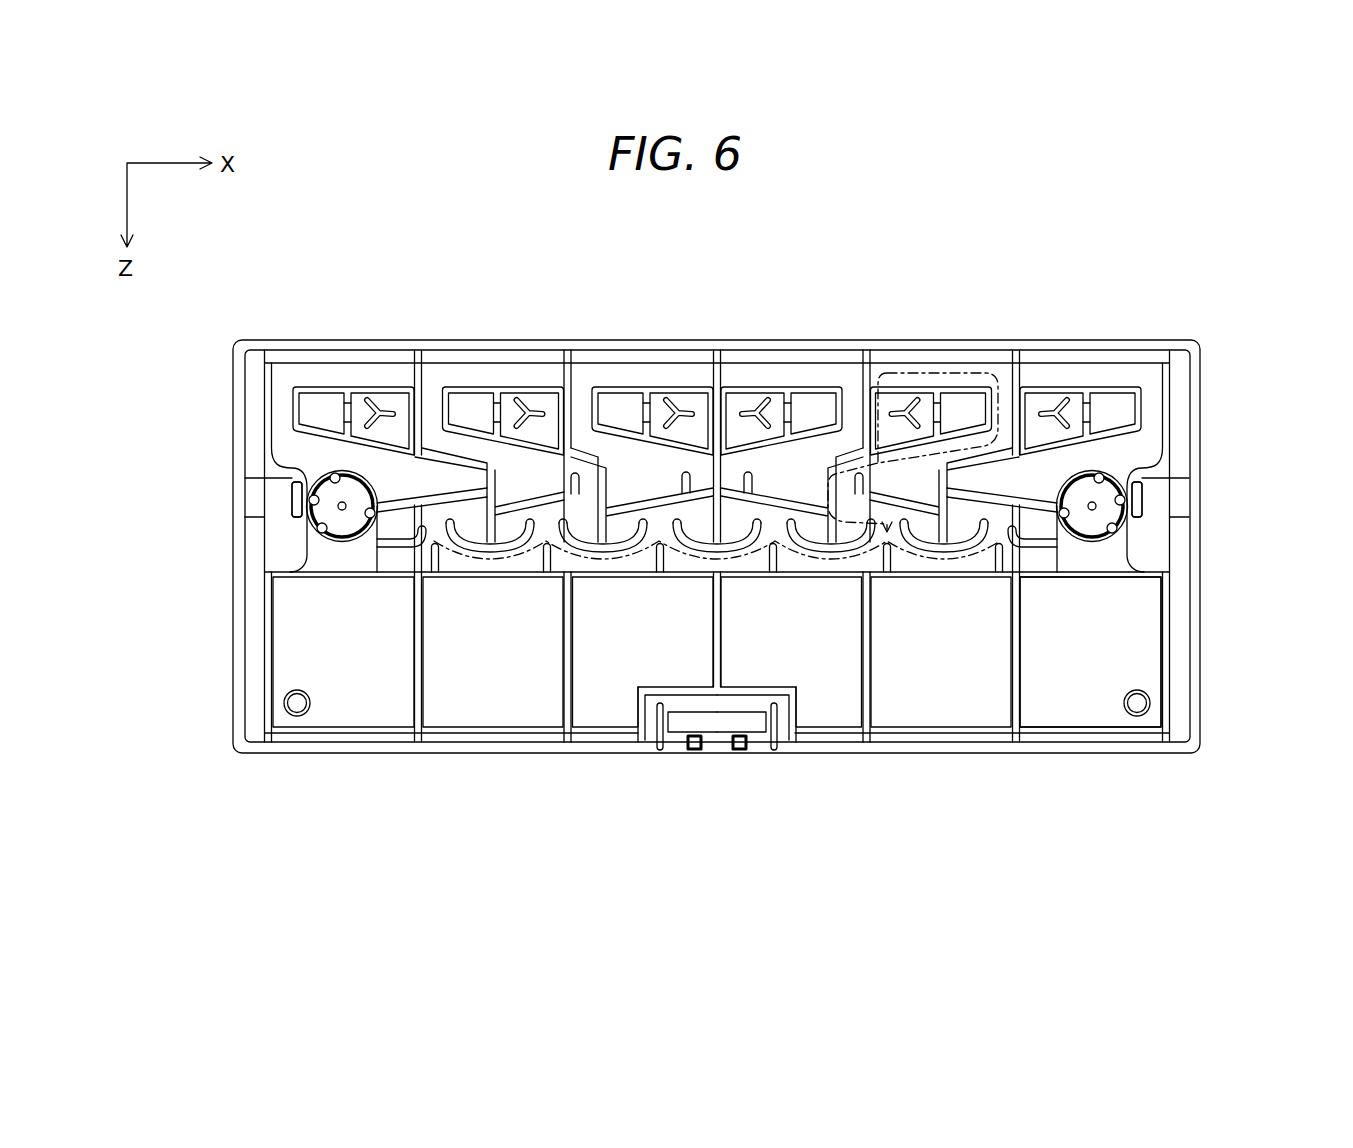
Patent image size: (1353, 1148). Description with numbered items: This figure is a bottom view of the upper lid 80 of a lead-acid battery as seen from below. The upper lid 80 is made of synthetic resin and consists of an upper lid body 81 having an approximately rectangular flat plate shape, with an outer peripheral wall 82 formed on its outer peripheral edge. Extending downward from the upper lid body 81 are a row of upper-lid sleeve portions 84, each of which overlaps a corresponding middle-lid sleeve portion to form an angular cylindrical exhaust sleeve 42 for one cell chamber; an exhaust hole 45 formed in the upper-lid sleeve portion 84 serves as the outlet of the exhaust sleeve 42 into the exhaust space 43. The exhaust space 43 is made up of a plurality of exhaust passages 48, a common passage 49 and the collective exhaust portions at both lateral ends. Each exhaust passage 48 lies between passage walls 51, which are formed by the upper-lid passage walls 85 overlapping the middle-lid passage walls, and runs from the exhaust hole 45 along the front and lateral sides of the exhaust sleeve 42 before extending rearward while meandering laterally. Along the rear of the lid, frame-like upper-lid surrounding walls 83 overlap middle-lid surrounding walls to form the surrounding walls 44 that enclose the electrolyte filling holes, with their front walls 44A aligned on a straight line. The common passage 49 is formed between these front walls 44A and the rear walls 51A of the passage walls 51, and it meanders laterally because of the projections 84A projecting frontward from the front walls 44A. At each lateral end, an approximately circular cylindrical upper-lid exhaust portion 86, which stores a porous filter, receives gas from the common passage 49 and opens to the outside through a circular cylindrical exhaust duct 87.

The upper lid 80 is at (772, 546).
The upper lid body 81 is at (1160, 547).
The outer peripheral wall 82 is at (1200, 623).
The upper-lid surrounding wall 83 is at (654, 702).
The surrounding wall 44 is at (268, 658).
The front wall 44A is at (1030, 570).
The upper-lid sleeve portion 84 is at (806, 354).
The exhaust sleeve 42 is at (473, 390).
The projection 84A is at (560, 552).
The upper-lid passage wall 85 is at (648, 532).
The passage wall 51 is at (648, 532).
The rear wall 51A is at (402, 547).
The upper-lid exhaust portion 86 is at (338, 545).
The exhaust duct 87 is at (268, 508).
The exhaust hole 45 is at (333, 412).
The exhaust passage 48 is at (942, 373).
The common passage 49 is at (733, 562).
The exhaust space 43 is at (717, 563).